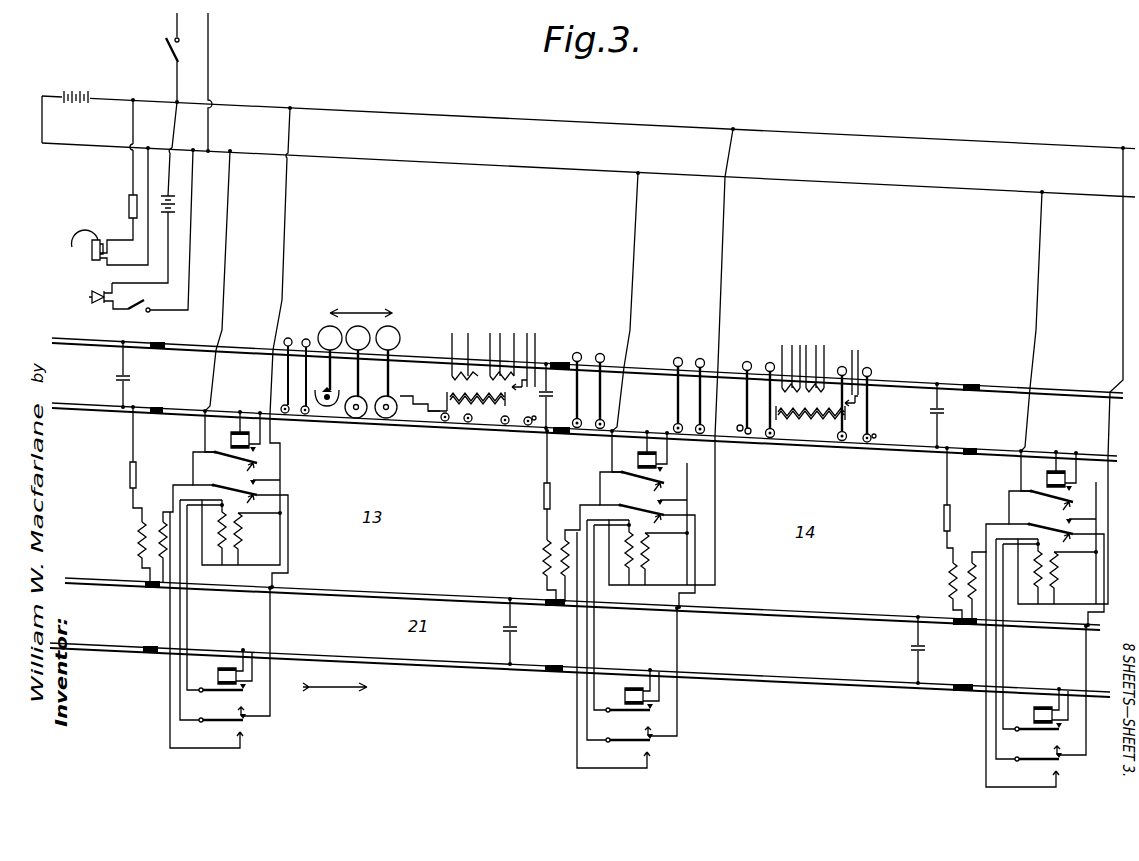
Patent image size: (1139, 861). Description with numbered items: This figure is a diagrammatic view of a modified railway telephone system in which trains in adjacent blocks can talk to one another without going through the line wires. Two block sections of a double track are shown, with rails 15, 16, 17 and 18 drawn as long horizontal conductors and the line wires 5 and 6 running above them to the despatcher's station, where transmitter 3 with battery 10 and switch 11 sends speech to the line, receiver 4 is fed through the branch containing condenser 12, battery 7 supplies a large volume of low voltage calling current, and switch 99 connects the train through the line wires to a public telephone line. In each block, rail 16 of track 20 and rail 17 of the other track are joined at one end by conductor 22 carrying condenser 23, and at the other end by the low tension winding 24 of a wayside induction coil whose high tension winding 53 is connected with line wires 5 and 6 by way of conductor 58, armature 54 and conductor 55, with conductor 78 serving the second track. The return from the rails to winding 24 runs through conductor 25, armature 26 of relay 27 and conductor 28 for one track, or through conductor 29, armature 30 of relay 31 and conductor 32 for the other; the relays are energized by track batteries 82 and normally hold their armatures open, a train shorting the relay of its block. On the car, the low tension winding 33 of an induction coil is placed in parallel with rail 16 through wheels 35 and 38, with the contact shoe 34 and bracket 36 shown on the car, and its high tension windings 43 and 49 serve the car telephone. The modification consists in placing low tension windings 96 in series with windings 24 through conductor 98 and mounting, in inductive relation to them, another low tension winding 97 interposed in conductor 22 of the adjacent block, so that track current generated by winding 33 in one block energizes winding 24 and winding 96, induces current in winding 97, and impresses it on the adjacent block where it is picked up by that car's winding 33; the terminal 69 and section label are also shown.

The transmitter 3 is at (89, 296).
The receiver 4 is at (90, 254).
The line wire 5 is at (588, 120).
The line wire 6 is at (588, 167).
The battery 7 is at (85, 92).
The battery 10 is at (176, 200).
The switch 11 is at (155, 231).
The condenser 12 is at (128, 200).
The rail 15 is at (243, 345).
The rail 16 is at (384, 420).
The rail 17 is at (305, 592).
The rail 18 is at (320, 650).
The track 20 is at (584, 415).
The conductor 22 is at (131, 433).
The condenser 23 is at (128, 473).
The low tension winding 24 is at (220, 552).
The conductor 25 is at (224, 496).
The armature 26 is at (1045, 530).
The relay 27 is at (244, 430).
The conductor 28 is at (204, 433).
The conductor 29 is at (178, 690).
The armature 30 is at (208, 720).
The relay 31 is at (218, 672).
The conductor 32 is at (170, 670).
The low tension winding 33 is at (475, 405).
The contact shoe 34 is at (430, 411).
The wheel 35 is at (527, 425).
The contact bracket 36 is at (407, 393).
The wheel 38 is at (328, 408).
The high tension winding 43 is at (498, 345).
The high tension winding 49 is at (462, 345).
The high tension winding 53 is at (243, 540).
The armature 54 is at (258, 462).
The conductor 55 is at (228, 272).
The conductor 58 is at (285, 240).
The source of current 69 is at (42, 115).
The conductor 78 is at (281, 502).
The track battery 82 is at (130, 377).
The low tension winding 96 is at (162, 520).
The low tension winding 97 is at (141, 530).
The conductor 98 is at (612, 617).
The switch 99 is at (168, 52).